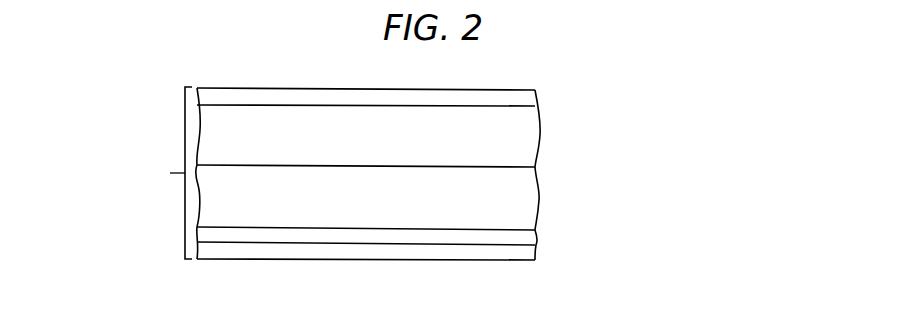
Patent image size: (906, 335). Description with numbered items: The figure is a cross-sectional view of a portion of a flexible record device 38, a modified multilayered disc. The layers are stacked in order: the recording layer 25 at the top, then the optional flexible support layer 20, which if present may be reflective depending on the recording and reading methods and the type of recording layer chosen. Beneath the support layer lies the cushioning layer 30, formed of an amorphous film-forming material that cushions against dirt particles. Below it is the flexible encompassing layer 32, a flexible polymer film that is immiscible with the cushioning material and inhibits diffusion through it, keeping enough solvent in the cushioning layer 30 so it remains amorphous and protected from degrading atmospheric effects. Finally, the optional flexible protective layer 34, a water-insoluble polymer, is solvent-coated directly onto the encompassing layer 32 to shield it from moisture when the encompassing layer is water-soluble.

The recording layer 25 is at (532, 104).
The optional flexible support layer 20 is at (530, 137).
The cushioning layer 30 is at (527, 192).
The flexible encompassing layer 32 is at (527, 240).
The optional flexible protective layer 34 is at (527, 253).
The flexible record device 38 is at (160, 175).